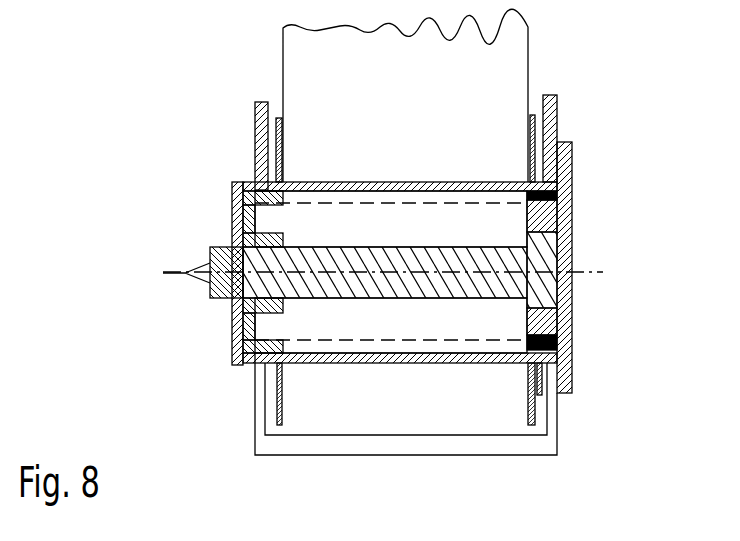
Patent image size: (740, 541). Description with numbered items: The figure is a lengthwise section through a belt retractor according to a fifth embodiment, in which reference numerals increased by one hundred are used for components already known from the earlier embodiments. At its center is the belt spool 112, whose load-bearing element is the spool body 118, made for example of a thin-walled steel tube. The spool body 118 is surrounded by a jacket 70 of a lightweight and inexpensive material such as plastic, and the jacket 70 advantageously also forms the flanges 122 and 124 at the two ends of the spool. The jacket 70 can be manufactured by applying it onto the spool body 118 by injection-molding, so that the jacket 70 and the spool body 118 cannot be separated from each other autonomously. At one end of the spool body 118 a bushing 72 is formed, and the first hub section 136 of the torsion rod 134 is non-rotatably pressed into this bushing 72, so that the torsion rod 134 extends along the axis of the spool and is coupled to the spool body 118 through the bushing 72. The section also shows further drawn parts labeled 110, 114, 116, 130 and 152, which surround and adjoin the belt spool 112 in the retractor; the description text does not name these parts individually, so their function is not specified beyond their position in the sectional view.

The jacket 70 is at (383, 182).
The bushing 72 is at (266, 244).
The cover 110 is at (542, 442).
The belt spool 112 is at (598, 181).
The housing 114 is at (512, 45).
The support bar 116 is at (262, 104).
The spool body 118 is at (378, 356).
The flange 122 is at (282, 143).
The flange 124 is at (533, 128).
The gap 130 is at (467, 363).
The torsion rod 134 is at (533, 283).
The first hub section 136 is at (238, 306).
The cavity 152 is at (446, 222).